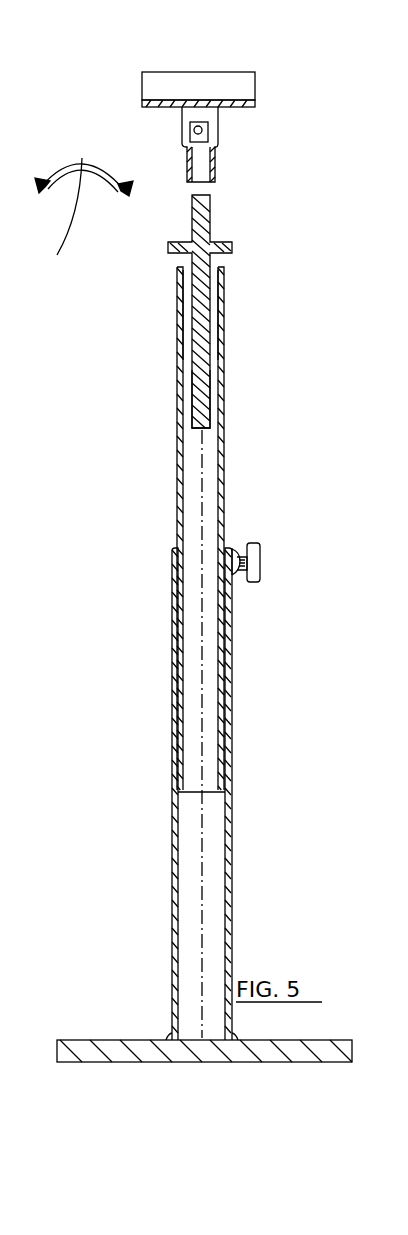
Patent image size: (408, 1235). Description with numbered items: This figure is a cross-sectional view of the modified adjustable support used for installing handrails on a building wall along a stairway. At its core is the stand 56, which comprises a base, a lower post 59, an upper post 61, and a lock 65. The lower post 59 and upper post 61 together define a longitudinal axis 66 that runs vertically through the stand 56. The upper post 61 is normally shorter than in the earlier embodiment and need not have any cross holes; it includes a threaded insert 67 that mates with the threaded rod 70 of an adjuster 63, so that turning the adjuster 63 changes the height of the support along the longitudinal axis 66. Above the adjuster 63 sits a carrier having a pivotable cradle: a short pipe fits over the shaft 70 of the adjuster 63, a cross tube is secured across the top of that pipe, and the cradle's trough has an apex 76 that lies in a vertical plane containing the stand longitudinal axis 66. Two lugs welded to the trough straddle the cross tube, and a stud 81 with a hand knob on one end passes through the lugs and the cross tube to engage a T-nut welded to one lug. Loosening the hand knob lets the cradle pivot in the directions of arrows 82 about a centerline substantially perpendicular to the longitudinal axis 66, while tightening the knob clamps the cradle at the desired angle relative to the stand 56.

The apex 76 is at (192, 100).
The stud 81 is at (202, 130).
The arrows 82 is at (75, 215).
The adjuster 63 is at (233, 242).
The threaded insert 67 is at (215, 333).
The threaded rod 70 is at (208, 413).
The upper post 61 is at (180, 485).
The lock 65 is at (260, 553).
The stand 56 is at (172, 645).
The longitudinal axis 66 is at (203, 702).
The lower post 59 is at (228, 872).